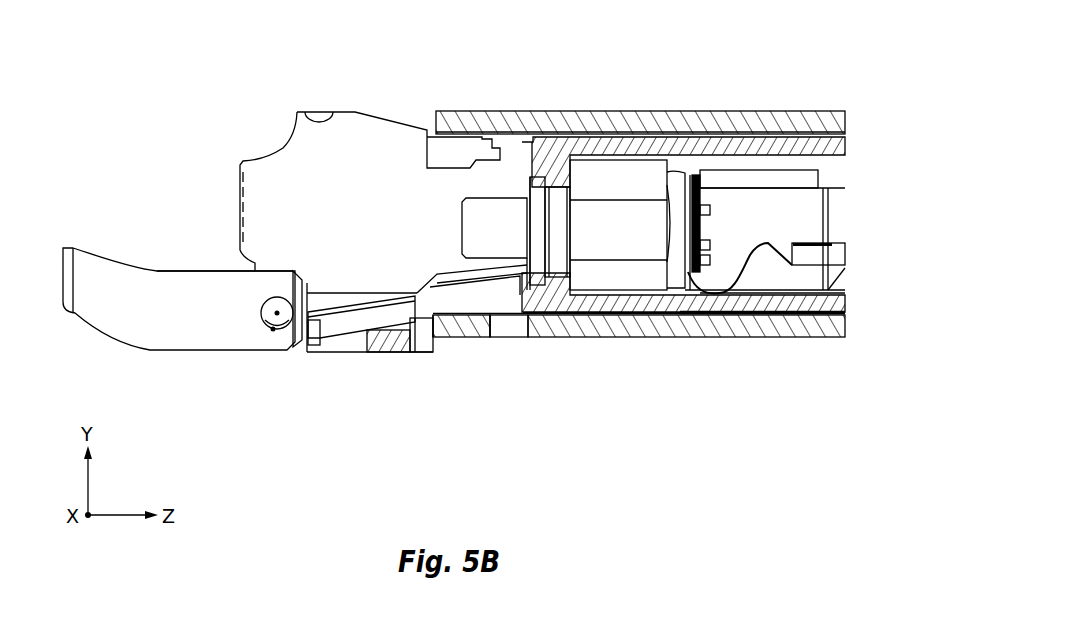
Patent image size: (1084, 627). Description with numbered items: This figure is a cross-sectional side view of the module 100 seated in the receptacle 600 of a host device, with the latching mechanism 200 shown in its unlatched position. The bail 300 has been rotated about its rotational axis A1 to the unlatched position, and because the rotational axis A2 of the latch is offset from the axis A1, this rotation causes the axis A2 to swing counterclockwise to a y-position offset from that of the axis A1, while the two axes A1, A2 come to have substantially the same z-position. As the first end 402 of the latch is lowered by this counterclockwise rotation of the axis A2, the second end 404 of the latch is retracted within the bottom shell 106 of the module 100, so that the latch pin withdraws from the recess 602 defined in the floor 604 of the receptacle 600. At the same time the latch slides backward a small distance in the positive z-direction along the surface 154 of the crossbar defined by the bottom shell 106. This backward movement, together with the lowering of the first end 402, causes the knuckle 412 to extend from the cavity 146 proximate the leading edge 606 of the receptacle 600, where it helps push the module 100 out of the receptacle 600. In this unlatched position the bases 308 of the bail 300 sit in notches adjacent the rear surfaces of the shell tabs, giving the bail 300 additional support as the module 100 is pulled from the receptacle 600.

The module 100 is at (862, 222).
The bottom shell 106 is at (652, 307).
The cavity 146 is at (346, 298).
The surface 154 is at (397, 325).
The latching mechanism 200 is at (229, 379).
The bail 300 is at (109, 349).
The bases 308 is at (328, 350).
The first end 402 is at (307, 355).
The second end 404 is at (479, 322).
The knuckle 412 is at (457, 338).
The receptacle 600 is at (845, 124).
The recess 602 is at (513, 335).
The floor 604 is at (740, 303).
The leading edge 606 is at (433, 338).
The rotational axis of the bail A1 is at (277, 313).
The rotational axis of the latch A2 is at (273, 329).